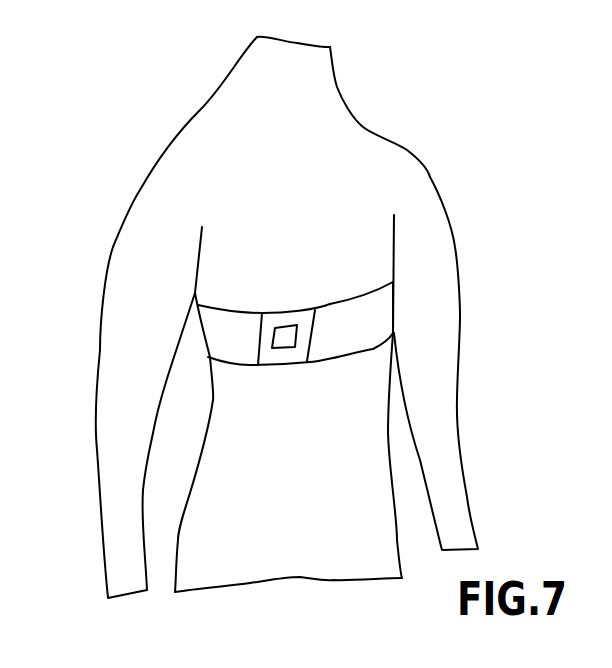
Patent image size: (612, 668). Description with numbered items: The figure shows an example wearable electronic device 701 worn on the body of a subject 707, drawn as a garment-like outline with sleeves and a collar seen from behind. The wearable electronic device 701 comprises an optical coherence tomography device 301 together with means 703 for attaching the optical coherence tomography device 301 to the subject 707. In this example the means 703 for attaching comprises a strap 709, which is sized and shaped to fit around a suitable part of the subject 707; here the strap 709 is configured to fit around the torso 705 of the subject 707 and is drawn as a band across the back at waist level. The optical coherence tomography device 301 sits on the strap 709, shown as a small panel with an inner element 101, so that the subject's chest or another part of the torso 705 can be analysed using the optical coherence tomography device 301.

The sensor device 101 is at (287, 330).
The optical coherence tomography device 301 is at (272, 355).
The wearable electronic device 701 is at (245, 310).
The means for attaching 703 is at (347, 345).
The torso 705 is at (223, 287).
The subject 707 is at (343, 143).
The strap 709 is at (378, 313).